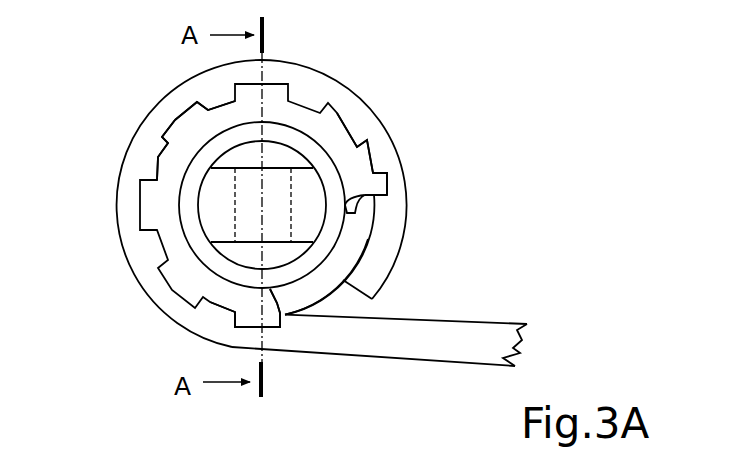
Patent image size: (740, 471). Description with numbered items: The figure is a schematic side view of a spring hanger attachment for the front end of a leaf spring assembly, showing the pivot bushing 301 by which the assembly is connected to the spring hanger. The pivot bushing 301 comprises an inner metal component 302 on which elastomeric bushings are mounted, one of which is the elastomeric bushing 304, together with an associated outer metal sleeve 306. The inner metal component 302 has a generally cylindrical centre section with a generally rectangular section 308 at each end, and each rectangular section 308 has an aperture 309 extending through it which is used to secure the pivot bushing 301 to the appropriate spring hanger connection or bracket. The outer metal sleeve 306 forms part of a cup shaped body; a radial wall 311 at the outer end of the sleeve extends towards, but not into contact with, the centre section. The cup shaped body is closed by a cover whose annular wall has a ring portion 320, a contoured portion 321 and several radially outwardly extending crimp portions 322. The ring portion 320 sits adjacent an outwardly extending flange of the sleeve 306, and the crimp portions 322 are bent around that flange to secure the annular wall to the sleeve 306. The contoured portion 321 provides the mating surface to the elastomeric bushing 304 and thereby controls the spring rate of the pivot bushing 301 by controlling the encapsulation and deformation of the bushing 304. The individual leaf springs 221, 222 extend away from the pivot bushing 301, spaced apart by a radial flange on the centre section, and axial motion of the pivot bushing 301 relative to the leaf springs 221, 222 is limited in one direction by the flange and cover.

The pivot bushing 301 is at (329, 117).
The inner metal component 302 is at (204, 196).
The elastomeric bushing 304 is at (192, 233).
The outer metal sleeve 306 is at (162, 140).
The rectangular section 308 is at (215, 235).
The aperture 309 is at (262, 159).
The radial wall 311 is at (352, 302).
The ring portion 320 is at (362, 167).
The contoured portion 321 is at (200, 128).
The crimp portion 322 is at (353, 128).
The leaf spring 221 is at (448, 325).
The leaf spring 222 is at (536, 325).